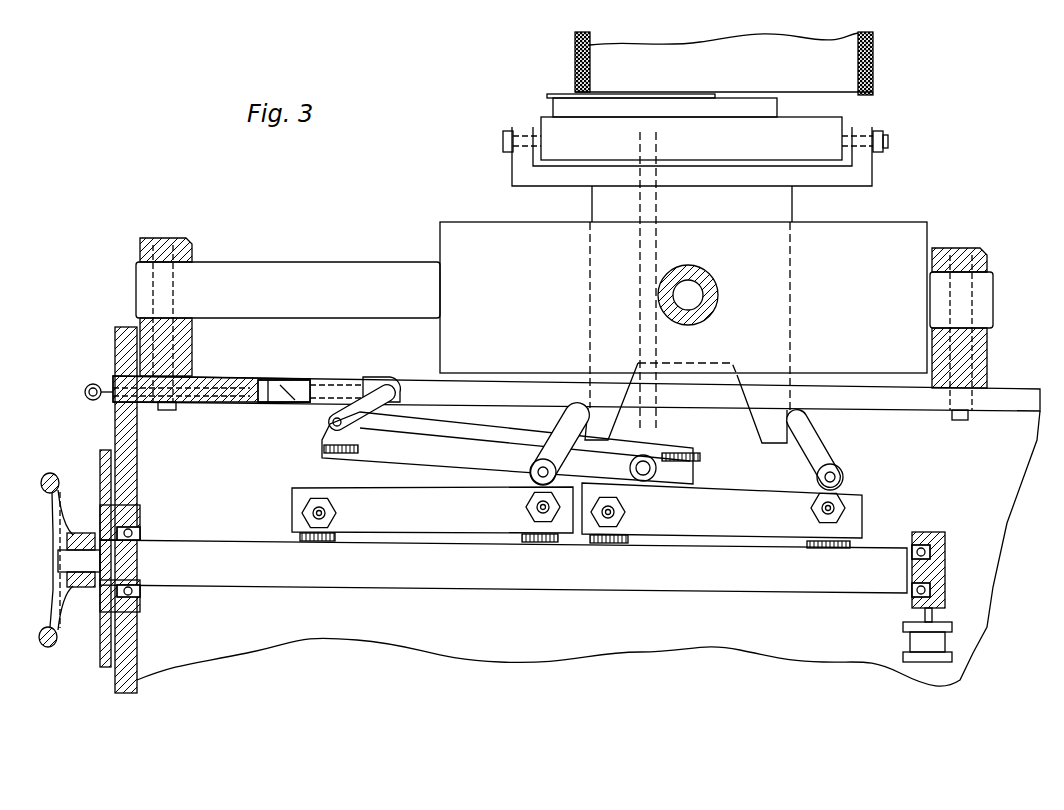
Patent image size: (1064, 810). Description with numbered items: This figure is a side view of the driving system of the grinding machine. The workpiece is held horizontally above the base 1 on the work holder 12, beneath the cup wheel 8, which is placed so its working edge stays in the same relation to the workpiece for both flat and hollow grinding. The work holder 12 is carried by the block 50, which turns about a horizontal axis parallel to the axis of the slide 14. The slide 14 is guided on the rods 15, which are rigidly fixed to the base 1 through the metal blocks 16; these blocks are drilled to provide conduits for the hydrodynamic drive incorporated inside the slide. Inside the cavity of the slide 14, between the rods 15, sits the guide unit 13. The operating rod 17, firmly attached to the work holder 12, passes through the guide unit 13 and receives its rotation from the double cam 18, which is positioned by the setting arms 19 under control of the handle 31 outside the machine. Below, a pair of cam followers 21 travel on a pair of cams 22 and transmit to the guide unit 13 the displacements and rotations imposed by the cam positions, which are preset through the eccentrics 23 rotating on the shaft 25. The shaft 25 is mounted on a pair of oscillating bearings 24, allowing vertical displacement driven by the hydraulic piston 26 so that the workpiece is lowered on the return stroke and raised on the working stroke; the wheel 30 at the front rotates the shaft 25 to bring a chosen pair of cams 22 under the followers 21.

The base 1 is at (1006, 396).
The cup wheel 8 is at (873, 76).
The work holder 12 is at (558, 103).
The guide unit 13 is at (597, 210).
The slide 14 is at (460, 236).
The rods 15 is at (305, 270).
The metal blocks 16 is at (185, 240).
The operating rod 17 is at (660, 197).
The double cam 18 is at (372, 460).
The setting arms 19 is at (325, 428).
The cam followers 21 is at (528, 478).
The cams 22 is at (432, 520).
The eccentrics 23 is at (320, 528).
The oscillating bearings 24 is at (140, 527).
The shaft 25 is at (338, 573).
The hydraulic piston 26 is at (912, 640).
The wheel 30 is at (58, 478).
The handle 31 is at (95, 383).
The block 50 is at (835, 134).